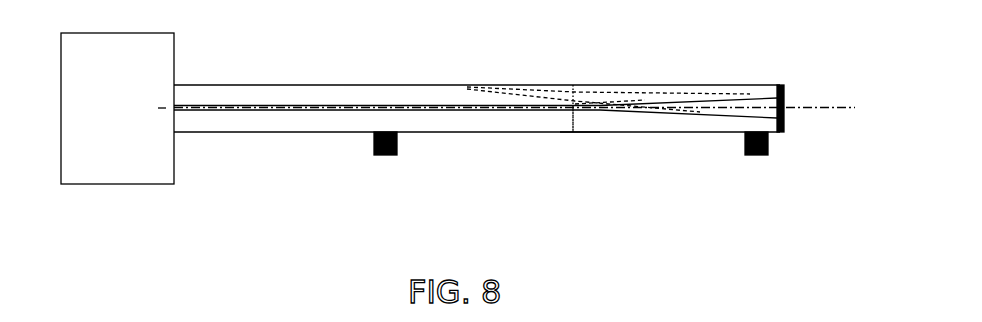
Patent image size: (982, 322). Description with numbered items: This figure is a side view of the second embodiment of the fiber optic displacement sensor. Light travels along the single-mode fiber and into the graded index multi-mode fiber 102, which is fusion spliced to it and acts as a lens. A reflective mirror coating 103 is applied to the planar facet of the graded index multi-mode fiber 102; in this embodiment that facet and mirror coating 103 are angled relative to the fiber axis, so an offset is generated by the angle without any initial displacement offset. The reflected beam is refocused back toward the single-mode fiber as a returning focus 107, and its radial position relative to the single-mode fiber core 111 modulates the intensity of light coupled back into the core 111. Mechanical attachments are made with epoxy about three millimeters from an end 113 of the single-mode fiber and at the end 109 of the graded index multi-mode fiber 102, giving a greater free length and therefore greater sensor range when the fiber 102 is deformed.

The graded index multi-mode fiber 102 is at (670, 85).
The reflective mirror coating 103 is at (779, 85).
The returning focus 107 is at (579, 85).
The end of the graded index multi-mode fiber 109 is at (782, 148).
The single-mode fiber core 111 is at (572, 112).
The end of the single-mode fiber 113 is at (577, 138).